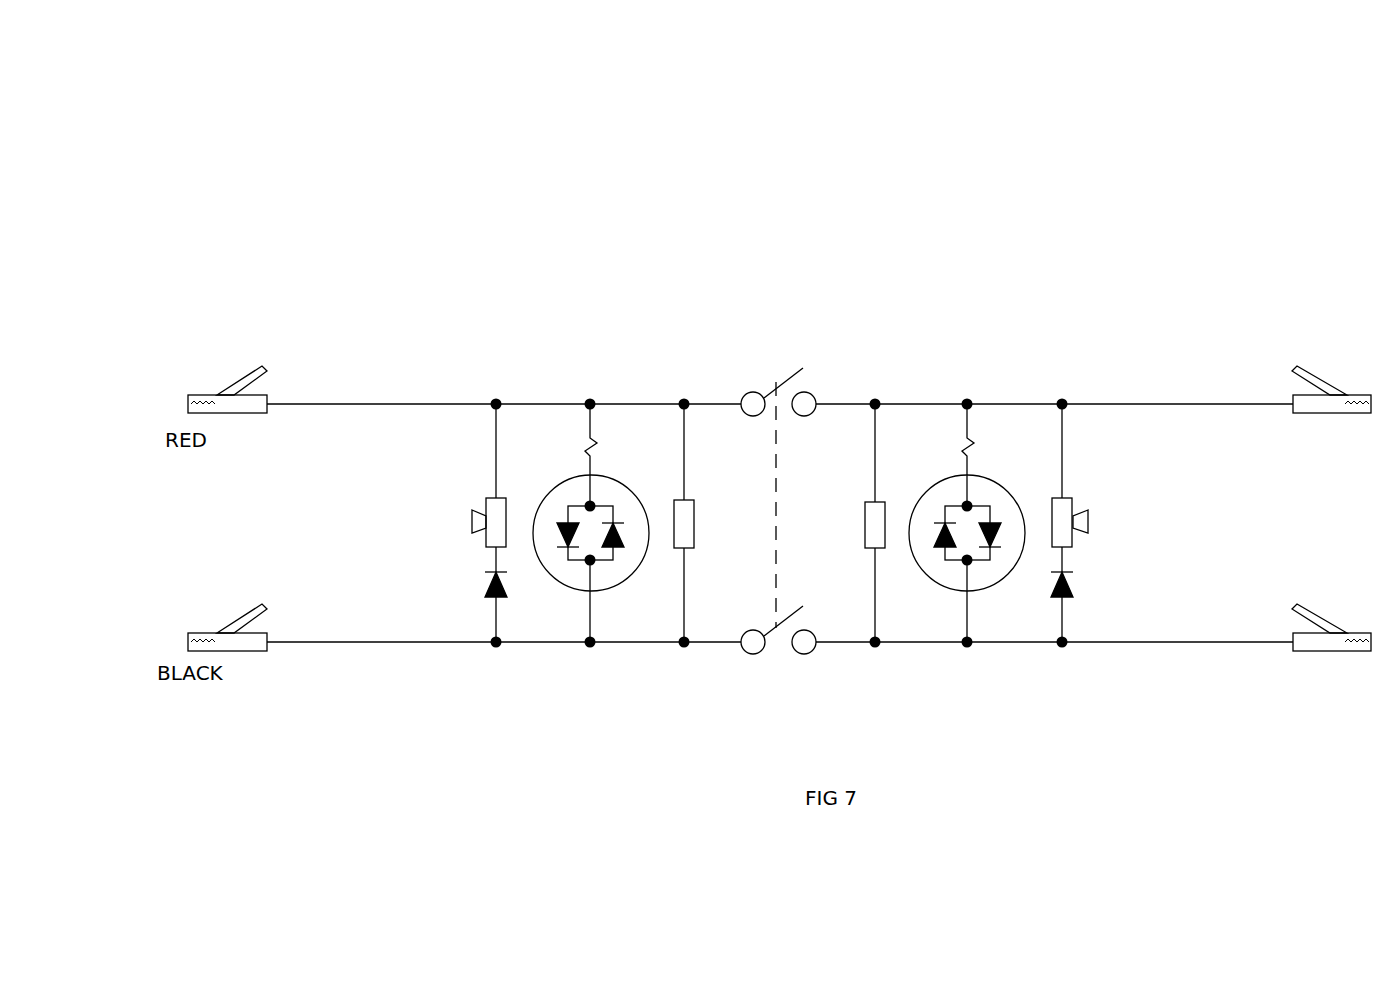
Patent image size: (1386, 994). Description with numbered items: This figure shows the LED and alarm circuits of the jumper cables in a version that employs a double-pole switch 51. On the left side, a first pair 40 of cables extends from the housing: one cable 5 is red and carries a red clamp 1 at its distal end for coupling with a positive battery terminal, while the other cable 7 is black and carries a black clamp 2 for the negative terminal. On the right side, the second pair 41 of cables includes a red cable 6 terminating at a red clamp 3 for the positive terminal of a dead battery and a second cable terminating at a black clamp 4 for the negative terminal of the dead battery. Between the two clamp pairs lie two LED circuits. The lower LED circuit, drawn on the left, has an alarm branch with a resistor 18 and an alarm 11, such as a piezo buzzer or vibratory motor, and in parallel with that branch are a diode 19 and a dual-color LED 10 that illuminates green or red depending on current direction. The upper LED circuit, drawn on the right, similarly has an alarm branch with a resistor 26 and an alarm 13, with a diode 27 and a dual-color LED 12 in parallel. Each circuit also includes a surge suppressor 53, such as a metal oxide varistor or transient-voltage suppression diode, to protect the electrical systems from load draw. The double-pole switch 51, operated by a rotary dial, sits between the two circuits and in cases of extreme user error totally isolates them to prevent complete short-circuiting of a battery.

The red clamp 1 is at (239, 378).
The black clamp 2 is at (265, 652).
The red clamp 3 is at (1320, 376).
The black clamp 4 is at (1353, 651).
The red cable 5 is at (407, 404).
The red cable 6 is at (1235, 404).
The black cable 7 is at (350, 643).
The first pair of cables 40 is at (380, 642).
The second pair of cables 41 is at (1200, 642).
The dual-color LED 10 is at (610, 590).
The dual-color LED 12 is at (990, 590).
The alarm 11 is at (487, 548).
The alarm 13 is at (1076, 530).
The resistor 18 is at (586, 440).
The resistor 26 is at (970, 442).
The diode 19 is at (511, 597).
The diode 27 is at (1068, 597).
The double-pole switch 51 is at (782, 381).
The surge suppressor 53 is at (671, 497).